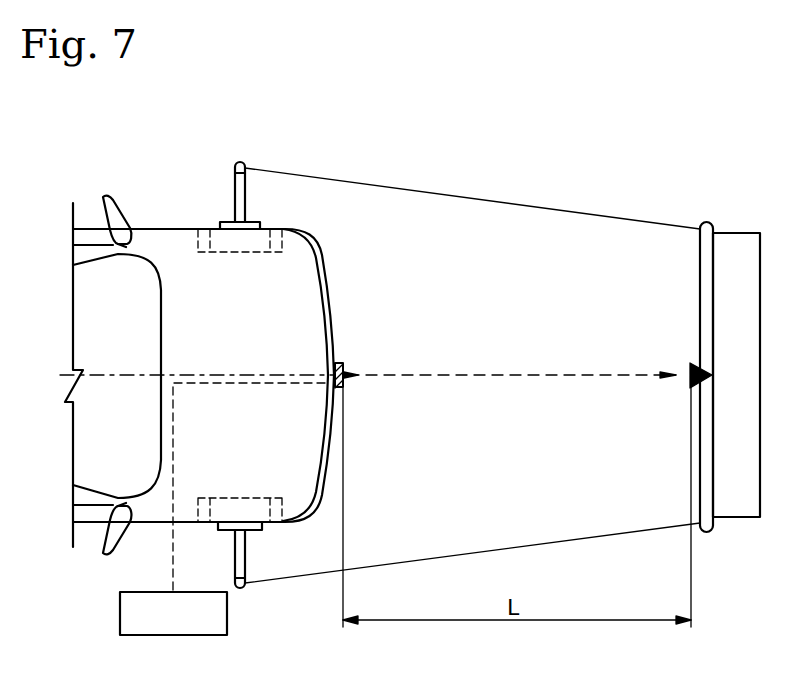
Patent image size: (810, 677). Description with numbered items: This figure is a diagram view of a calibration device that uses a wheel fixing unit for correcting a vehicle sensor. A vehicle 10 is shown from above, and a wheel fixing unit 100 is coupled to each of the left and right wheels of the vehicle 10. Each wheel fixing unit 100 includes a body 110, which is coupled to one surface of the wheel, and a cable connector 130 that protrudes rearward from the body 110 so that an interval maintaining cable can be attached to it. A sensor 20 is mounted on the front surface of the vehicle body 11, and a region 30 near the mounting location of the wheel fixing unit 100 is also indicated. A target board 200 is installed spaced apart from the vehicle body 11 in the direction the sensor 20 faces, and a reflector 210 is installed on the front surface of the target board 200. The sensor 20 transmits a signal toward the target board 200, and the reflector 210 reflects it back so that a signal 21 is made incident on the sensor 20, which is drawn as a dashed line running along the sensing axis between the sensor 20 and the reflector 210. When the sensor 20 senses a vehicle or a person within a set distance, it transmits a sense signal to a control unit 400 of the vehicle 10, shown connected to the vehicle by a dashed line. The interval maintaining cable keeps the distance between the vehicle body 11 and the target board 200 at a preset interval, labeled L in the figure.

The vehicle 10 is at (92, 450).
The vehicle body 11 is at (156, 238).
The sensor 20 is at (339, 362).
The signal 21 is at (453, 375).
The mounting region 30 is at (249, 254).
The wheel fixing unit 100 is at (258, 190).
The body 110 is at (224, 222).
The cable connector 130 is at (233, 180).
The target board 200 is at (741, 220).
The reflector 210 is at (708, 366).
The control unit 400 is at (120, 612).